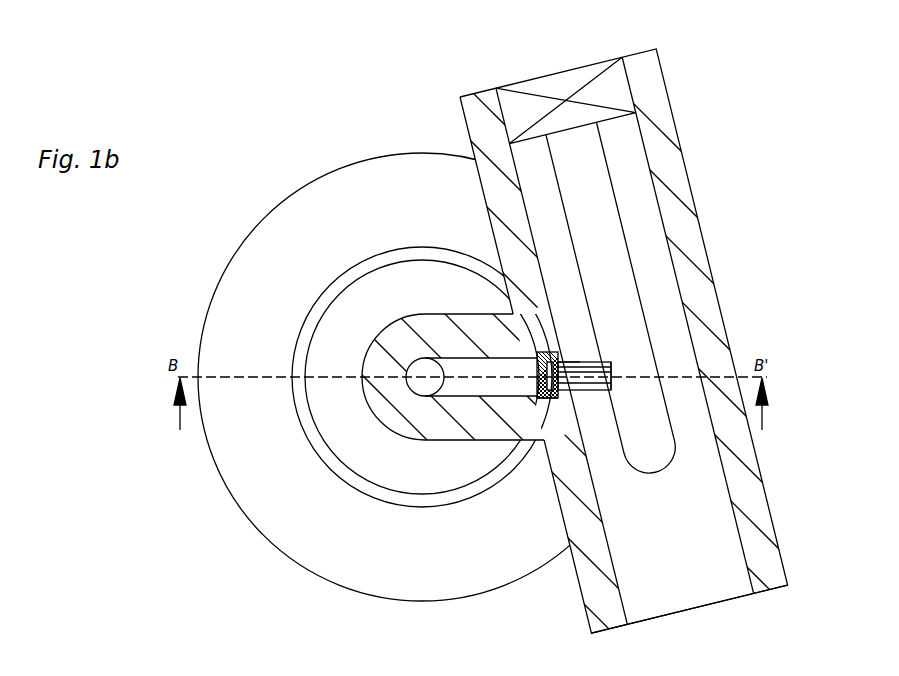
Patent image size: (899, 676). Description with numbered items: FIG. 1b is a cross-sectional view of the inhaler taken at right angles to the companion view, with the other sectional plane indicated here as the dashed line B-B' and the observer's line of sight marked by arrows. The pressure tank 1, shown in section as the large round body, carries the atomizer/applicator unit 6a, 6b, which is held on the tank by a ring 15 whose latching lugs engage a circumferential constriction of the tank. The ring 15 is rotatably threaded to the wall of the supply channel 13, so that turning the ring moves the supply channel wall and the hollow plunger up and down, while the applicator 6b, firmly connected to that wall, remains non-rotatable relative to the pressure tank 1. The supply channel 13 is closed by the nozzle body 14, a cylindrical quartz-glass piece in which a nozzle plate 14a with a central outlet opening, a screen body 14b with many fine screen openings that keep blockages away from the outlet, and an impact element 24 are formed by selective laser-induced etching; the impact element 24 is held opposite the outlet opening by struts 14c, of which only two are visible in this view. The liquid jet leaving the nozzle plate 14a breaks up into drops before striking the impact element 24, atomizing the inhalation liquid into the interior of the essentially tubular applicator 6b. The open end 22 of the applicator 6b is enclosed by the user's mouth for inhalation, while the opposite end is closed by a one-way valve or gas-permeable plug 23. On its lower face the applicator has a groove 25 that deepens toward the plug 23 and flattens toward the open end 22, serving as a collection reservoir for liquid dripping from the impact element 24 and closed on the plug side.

The pressure tank 1 is at (268, 330).
The ring 15 is at (359, 334).
The supply channel 13 is at (413, 368).
The atomizer unit 6a is at (443, 330).
The applicator 6b is at (674, 529).
The groove 25 is at (604, 236).
The one-way valve or gas-permeable plug 23 is at (591, 64).
The open end 22 is at (690, 610).
The nozzle body 14 is at (557, 359).
The nozzle plate 14a is at (612, 388).
The screen body 14b is at (537, 400).
The struts 14c is at (568, 364).
The impact element 24 is at (612, 373).